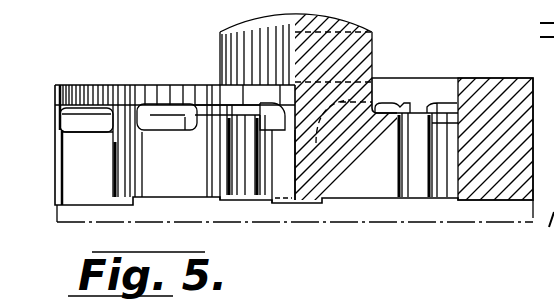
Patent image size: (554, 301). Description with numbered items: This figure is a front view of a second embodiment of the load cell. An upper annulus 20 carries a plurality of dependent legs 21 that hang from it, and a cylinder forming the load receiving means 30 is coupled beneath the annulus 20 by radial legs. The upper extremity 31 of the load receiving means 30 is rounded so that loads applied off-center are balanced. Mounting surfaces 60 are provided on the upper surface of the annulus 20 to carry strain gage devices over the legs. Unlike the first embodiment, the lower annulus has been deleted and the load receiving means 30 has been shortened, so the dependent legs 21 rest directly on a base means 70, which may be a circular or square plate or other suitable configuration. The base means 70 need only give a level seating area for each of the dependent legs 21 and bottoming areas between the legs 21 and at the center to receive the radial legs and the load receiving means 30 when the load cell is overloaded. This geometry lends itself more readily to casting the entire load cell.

The annulus 20 is at (55, 85).
The dependent legs 21 is at (55, 158).
The load receiving means 30 is at (220, 63).
The upper extremity 31 is at (266, 20).
The mounting surfaces 60 is at (473, 80).
The base means 70 is at (303, 220).